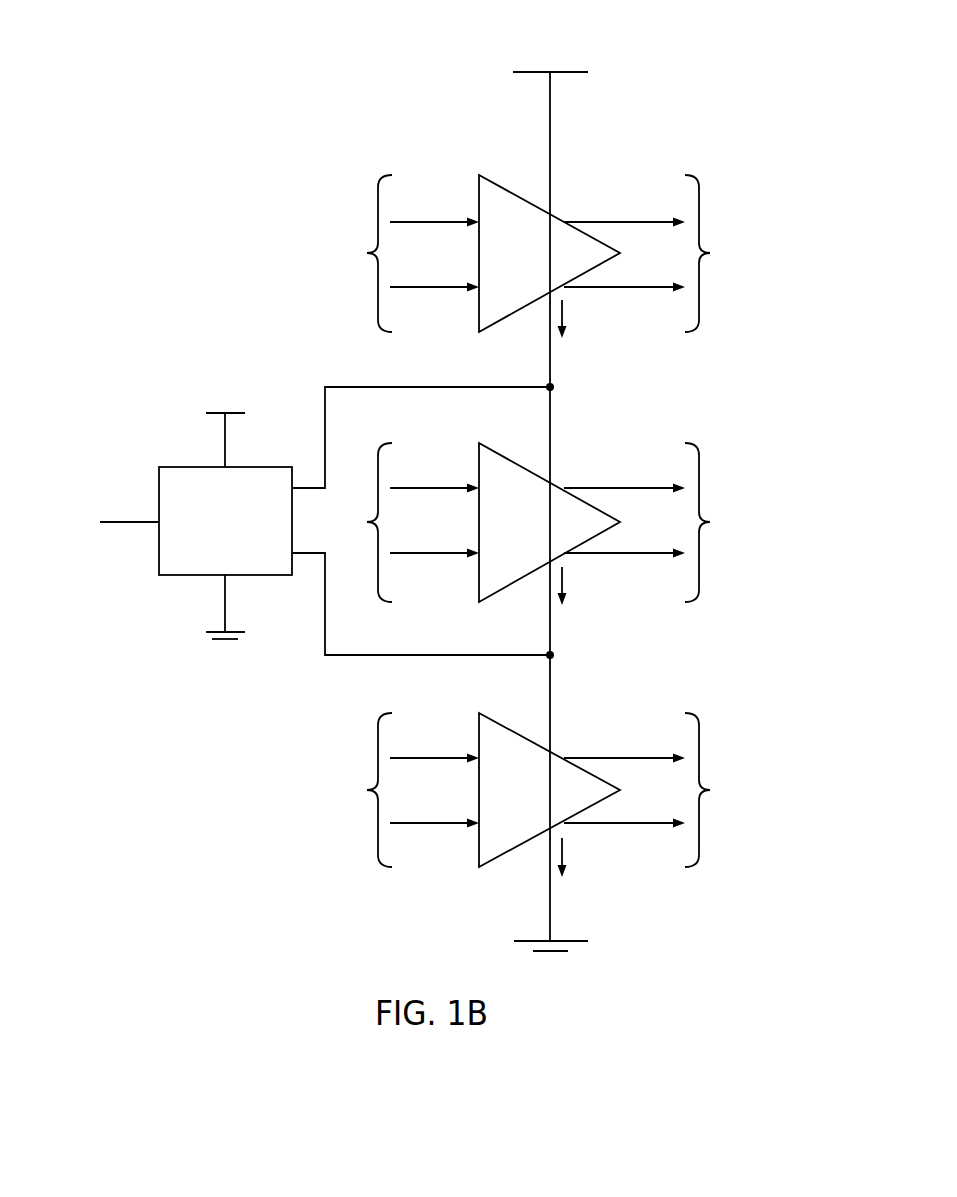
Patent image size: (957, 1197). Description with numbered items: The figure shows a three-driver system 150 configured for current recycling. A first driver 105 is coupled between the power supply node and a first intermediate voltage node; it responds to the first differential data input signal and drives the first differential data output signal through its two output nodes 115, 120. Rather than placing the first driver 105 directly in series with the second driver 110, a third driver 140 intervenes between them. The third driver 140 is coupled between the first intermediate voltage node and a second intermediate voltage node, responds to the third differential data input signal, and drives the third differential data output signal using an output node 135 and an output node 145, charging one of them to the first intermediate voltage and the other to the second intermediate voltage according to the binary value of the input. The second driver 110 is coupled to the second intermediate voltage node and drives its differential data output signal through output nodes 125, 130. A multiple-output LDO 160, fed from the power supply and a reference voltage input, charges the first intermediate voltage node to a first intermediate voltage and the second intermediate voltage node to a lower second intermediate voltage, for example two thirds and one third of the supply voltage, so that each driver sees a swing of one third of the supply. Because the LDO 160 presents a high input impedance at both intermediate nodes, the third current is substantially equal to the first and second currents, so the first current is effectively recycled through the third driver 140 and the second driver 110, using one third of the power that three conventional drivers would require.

The three-driver system 150 is at (318, 107).
The first driver 105 is at (501, 266).
The output node 115 is at (566, 220).
The output node 120 is at (566, 288).
The third driver 140 is at (501, 535).
The output node 135 is at (566, 487).
The output node 145 is at (566, 554).
The second driver 110 is at (501, 803).
The output node 125 is at (566, 757).
The output node 130 is at (566, 824).
The multiple-output LDO 160 is at (170, 467).